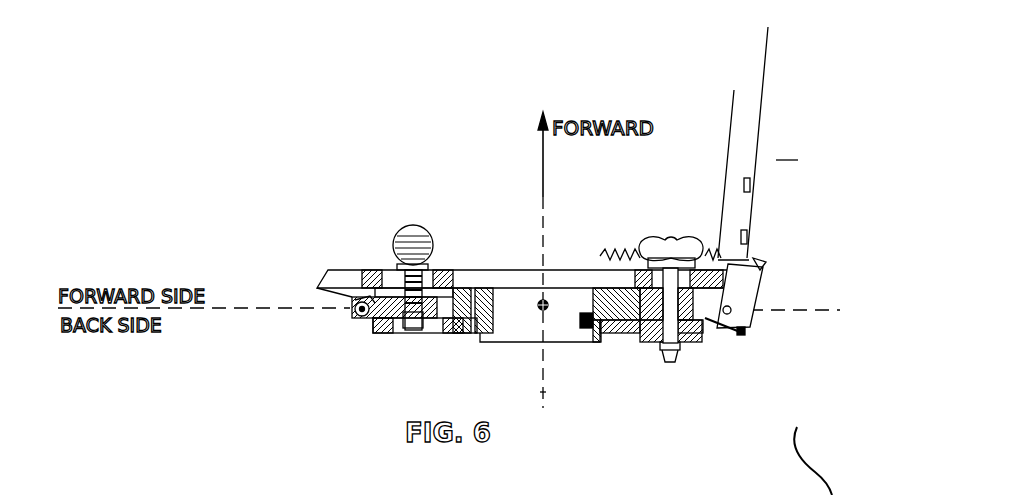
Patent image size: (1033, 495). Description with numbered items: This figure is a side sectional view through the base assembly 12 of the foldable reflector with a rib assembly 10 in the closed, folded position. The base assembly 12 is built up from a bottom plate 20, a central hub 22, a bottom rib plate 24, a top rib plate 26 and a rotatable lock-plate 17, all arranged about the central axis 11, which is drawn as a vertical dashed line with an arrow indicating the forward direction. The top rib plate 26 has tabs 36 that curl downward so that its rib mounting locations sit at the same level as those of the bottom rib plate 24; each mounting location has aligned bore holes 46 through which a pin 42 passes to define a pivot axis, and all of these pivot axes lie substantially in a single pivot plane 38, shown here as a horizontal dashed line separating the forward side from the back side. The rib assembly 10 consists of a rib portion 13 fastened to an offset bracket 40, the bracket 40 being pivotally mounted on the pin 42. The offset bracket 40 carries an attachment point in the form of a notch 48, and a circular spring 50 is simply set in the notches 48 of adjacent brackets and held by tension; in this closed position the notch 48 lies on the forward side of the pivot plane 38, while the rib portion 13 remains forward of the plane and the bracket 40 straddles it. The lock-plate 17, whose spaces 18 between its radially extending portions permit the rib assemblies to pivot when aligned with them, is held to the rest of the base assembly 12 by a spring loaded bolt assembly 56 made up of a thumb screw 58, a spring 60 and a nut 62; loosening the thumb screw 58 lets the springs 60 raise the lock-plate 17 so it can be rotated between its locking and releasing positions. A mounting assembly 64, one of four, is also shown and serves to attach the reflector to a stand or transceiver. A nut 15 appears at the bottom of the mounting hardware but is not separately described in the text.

The rib assembly 10 is at (787, 149).
The central axis 11 is at (543, 396).
The base assembly 12 is at (332, 315).
The rib portion 13 is at (760, 120).
The nut 15 is at (715, 325).
The lock-plate 17 is at (440, 270).
The spaces 18 is at (327, 275).
The bottom plate 20 is at (457, 336).
The central hub 22 is at (487, 292).
The bottom rib plate 24 is at (718, 316).
The top rib plate 26 is at (367, 318).
The tabs 36 is at (353, 303).
The pivot plane 38 is at (840, 310).
The offset bracket 40 is at (769, 283).
The pin 42 is at (731, 311).
The bore holes 46 is at (353, 316).
The notches 48 is at (766, 263).
The circular spring 50 is at (605, 252).
The spring loaded bolt assembly 56 is at (426, 222).
The thumb screw 58 is at (406, 228).
The spring 60 is at (395, 285).
The nut 62 is at (398, 328).
The mounting assembly 64 is at (662, 235).